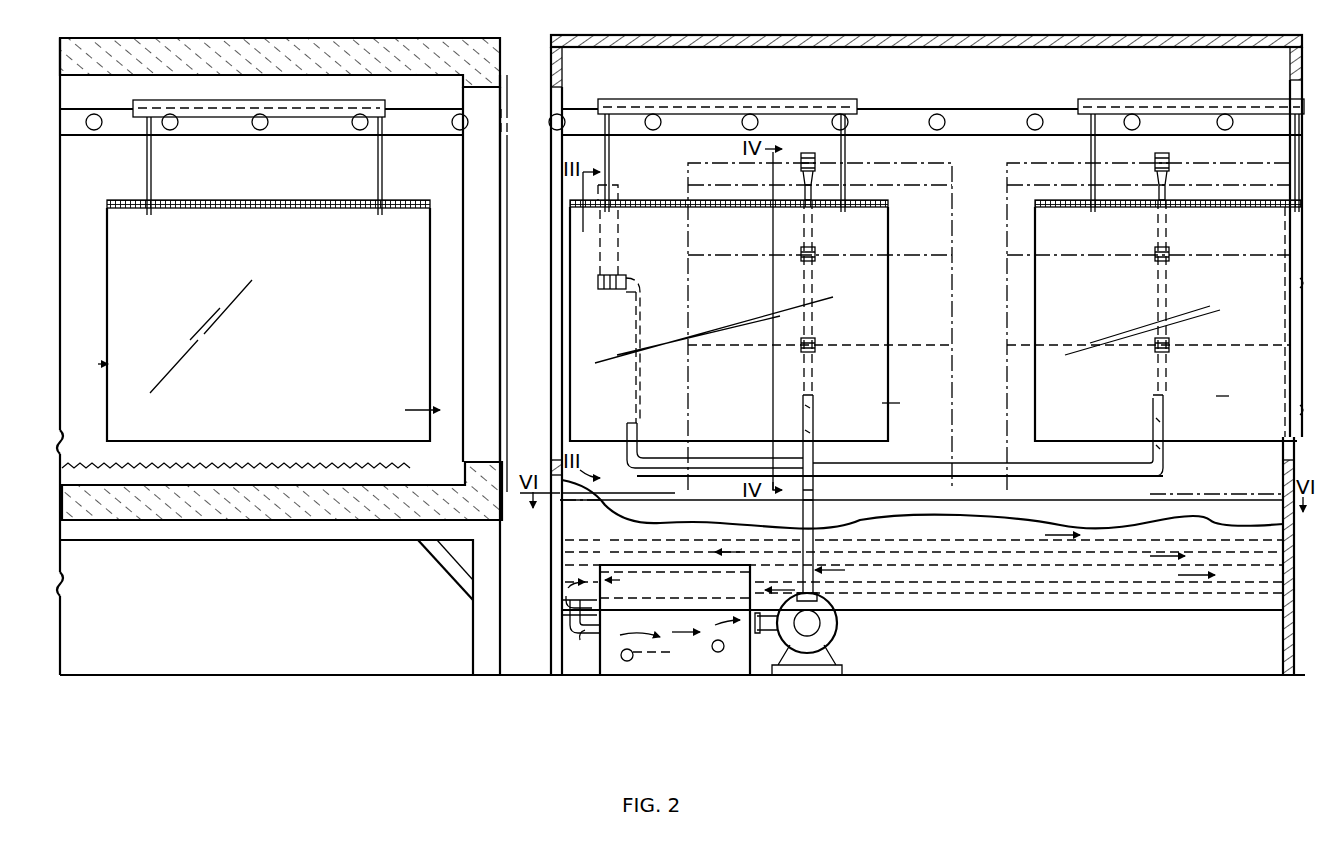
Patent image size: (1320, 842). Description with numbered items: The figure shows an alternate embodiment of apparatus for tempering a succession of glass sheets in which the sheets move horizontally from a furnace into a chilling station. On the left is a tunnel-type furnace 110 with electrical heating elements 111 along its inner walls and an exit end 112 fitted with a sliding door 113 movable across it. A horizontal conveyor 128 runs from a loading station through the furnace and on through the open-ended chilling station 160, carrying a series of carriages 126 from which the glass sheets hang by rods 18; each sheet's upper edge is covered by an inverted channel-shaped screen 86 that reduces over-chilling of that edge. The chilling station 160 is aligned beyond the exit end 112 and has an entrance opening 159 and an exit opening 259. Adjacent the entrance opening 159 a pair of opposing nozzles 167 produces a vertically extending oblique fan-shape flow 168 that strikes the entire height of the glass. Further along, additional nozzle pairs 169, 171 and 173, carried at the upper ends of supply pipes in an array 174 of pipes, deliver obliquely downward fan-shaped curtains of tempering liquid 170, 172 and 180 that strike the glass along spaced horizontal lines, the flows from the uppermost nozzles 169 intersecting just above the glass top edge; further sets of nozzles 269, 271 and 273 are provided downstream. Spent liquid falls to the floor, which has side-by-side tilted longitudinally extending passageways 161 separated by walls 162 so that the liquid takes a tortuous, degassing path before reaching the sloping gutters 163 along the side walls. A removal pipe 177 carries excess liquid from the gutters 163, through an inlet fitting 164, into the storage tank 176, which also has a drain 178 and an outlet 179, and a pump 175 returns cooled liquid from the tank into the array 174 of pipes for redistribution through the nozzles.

The hanger rods 18 is at (153, 178).
The inverted channel-shaped screen 86 is at (274, 197).
The tunnel-type furnace 110 is at (60, 496).
The electrical heating elements 111 is at (104, 466).
The exit end 112 is at (472, 172).
The sliding door 113 is at (508, 92).
The carriages 126 is at (128, 103).
The horizontal conveyor 128 is at (1000, 102).
The entrance opening 159 is at (572, 206).
The chilling station 160 is at (680, 34).
The longitudinally extending passageways 161 is at (1018, 548).
The walls 162 is at (1088, 502).
The sloping gutters 163 is at (962, 608).
The inlet fitting 164 is at (567, 620).
The opposing nozzles 167 is at (612, 282).
The fan-shape flow 168 is at (600, 312).
The uppermost pair of nozzles 169 is at (816, 160).
The continuous flows 170 is at (953, 227).
The nozzles 171 is at (814, 250).
The curtain of tempering liquid 172 is at (955, 322).
The nozzles 173 is at (815, 342).
The array of pipes 174 is at (936, 472).
The pump 175 is at (830, 630).
The storage tank 176 is at (742, 658).
The removal pipe 177 is at (581, 636).
The drain 178 is at (630, 662).
The outlet 179 is at (718, 653).
The curtain of tempering liquid 180 is at (954, 440).
The exit opening 259 is at (1292, 178).
The additional nozzles 269 is at (1170, 160).
The additional nozzles 271 is at (1170, 256).
The additional nozzles 273 is at (1170, 344).